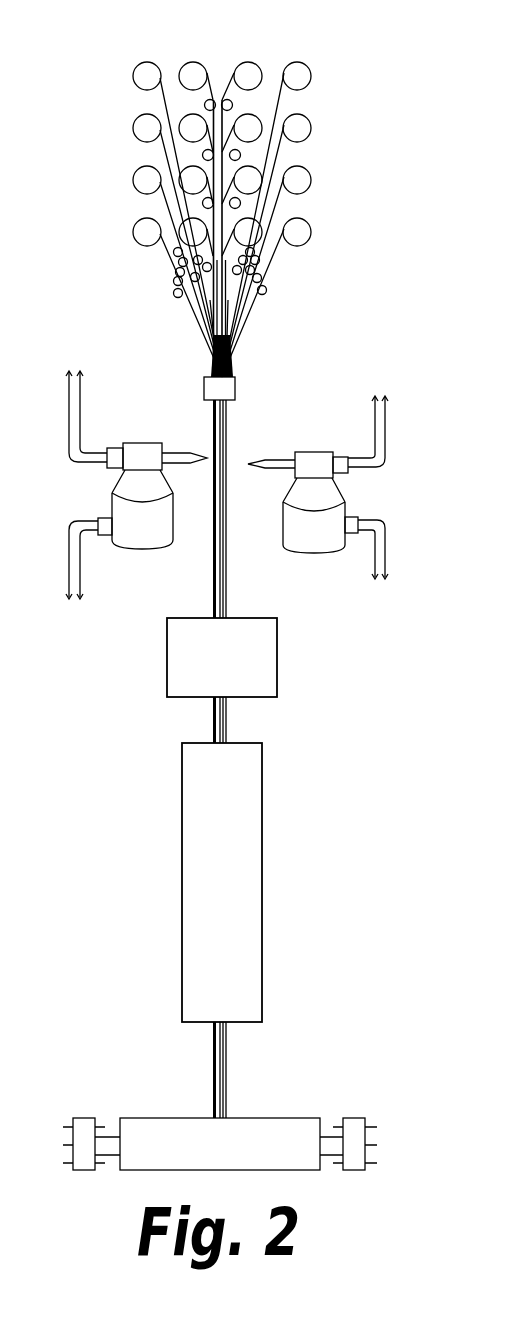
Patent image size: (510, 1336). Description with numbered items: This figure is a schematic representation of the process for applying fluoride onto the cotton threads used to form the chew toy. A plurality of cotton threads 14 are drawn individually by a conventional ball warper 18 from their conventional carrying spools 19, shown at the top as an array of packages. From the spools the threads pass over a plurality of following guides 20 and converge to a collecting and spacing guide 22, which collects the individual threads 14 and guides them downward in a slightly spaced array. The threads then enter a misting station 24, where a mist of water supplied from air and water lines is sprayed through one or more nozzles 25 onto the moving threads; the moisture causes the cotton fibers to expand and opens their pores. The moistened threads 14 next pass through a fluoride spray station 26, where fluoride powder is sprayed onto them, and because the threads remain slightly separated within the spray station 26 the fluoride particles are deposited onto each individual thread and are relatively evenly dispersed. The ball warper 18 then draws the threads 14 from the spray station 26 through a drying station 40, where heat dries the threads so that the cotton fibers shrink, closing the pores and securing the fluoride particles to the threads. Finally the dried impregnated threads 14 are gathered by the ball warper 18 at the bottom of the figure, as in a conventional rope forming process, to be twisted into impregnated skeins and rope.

The cotton threads 14 is at (279, 157).
The ball warper 18 is at (287, 1130).
The carrying spools 19 is at (232, 78).
The following guides 20 is at (175, 292).
The collecting and spacing guide 22 is at (237, 378).
The misting station 24 is at (330, 377).
The nozzles 25 is at (188, 452).
The fluoride spray station 26 is at (278, 657).
The drying station 40 is at (262, 863).